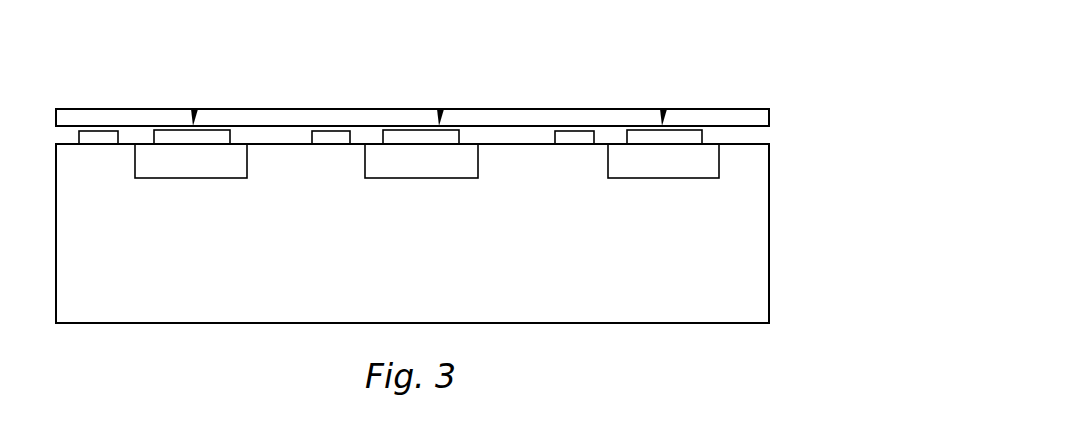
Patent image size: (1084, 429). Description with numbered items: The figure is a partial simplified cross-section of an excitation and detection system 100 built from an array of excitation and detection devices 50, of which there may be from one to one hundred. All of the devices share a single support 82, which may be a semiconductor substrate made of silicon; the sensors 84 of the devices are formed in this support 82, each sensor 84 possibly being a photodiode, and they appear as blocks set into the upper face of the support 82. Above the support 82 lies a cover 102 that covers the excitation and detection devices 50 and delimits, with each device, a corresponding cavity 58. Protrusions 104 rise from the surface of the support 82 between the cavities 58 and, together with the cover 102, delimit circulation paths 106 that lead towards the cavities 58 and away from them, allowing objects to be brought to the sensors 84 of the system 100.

The excitation and detection system 100 is at (752, 50).
The cover 102 is at (742, 119).
The protrusions 104 is at (330, 138).
The circulation paths 106 is at (317, 128).
The excitation and detection devices 50 is at (195, 108).
The cavity 58 is at (207, 128).
The support 82 is at (743, 268).
The sensors 84 is at (153, 157).